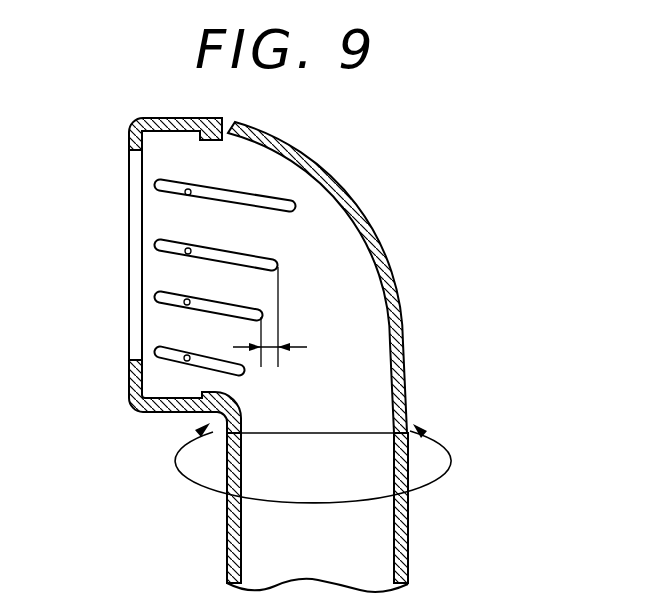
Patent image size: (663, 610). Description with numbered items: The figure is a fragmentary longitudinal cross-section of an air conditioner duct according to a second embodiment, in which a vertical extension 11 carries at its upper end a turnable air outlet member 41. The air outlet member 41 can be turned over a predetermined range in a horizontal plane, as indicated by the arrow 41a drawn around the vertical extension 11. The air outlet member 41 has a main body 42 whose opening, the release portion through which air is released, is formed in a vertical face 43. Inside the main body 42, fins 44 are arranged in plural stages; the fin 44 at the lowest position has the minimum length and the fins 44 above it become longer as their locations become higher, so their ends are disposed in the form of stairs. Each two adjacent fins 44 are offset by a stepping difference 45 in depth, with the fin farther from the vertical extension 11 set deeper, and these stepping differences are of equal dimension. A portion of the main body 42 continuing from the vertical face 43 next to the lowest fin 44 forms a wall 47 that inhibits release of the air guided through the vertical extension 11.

The vertical extension 11 is at (227, 565).
The air outlet member 41 is at (375, 277).
The arrow 41a is at (177, 462).
The main body 42 is at (386, 241).
The vertical face 43 is at (129, 207).
The fins 44 is at (278, 193).
The stepping difference 45 is at (268, 346).
The wall 47 is at (129, 400).